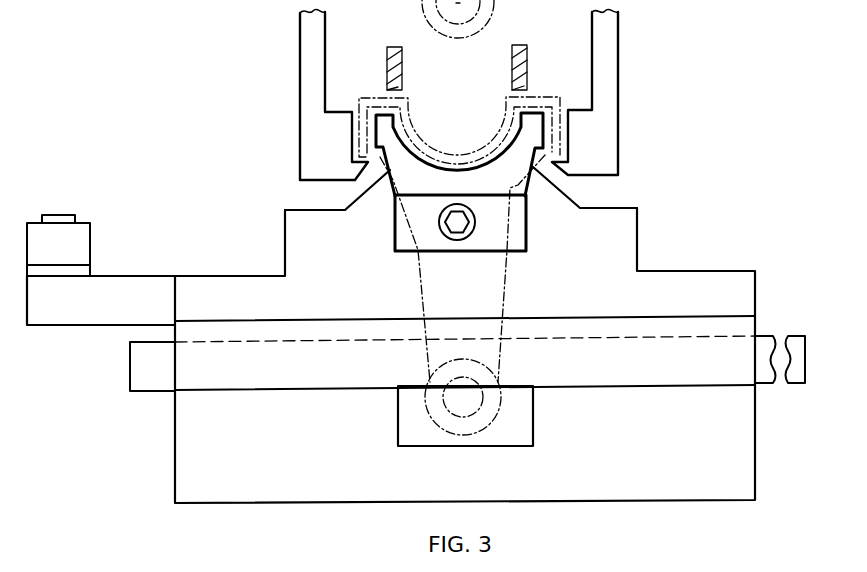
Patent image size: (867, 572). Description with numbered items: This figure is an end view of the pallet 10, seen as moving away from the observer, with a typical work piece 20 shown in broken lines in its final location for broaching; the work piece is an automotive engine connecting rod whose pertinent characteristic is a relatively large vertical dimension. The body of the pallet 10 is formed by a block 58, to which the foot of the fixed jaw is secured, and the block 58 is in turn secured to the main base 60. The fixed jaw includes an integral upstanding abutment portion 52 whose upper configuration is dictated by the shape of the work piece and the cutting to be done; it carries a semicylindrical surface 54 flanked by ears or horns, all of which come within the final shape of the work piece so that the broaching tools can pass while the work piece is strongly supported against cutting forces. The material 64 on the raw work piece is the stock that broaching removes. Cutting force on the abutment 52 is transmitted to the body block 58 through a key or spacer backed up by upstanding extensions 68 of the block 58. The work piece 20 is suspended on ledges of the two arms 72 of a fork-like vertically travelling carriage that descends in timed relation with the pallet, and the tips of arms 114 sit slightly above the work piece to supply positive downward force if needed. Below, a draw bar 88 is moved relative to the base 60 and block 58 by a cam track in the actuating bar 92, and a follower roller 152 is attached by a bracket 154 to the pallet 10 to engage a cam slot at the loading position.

The pallet 10 is at (794, 312).
The work piece 20 is at (417, 268).
The abutment portion 52 is at (460, 213).
The semicylindrical surface 54 is at (480, 162).
The block 58 is at (586, 299).
The main base 60 is at (652, 428).
The material to be removed 64 is at (362, 100).
The upstanding extensions 68 is at (362, 194).
The arms 72 is at (300, 72).
The draw bar 88 is at (527, 440).
The actuating bar 92 is at (130, 370).
The arms 114 is at (393, 47).
The follower roller 152 is at (90, 240).
The bracket 154 is at (125, 275).